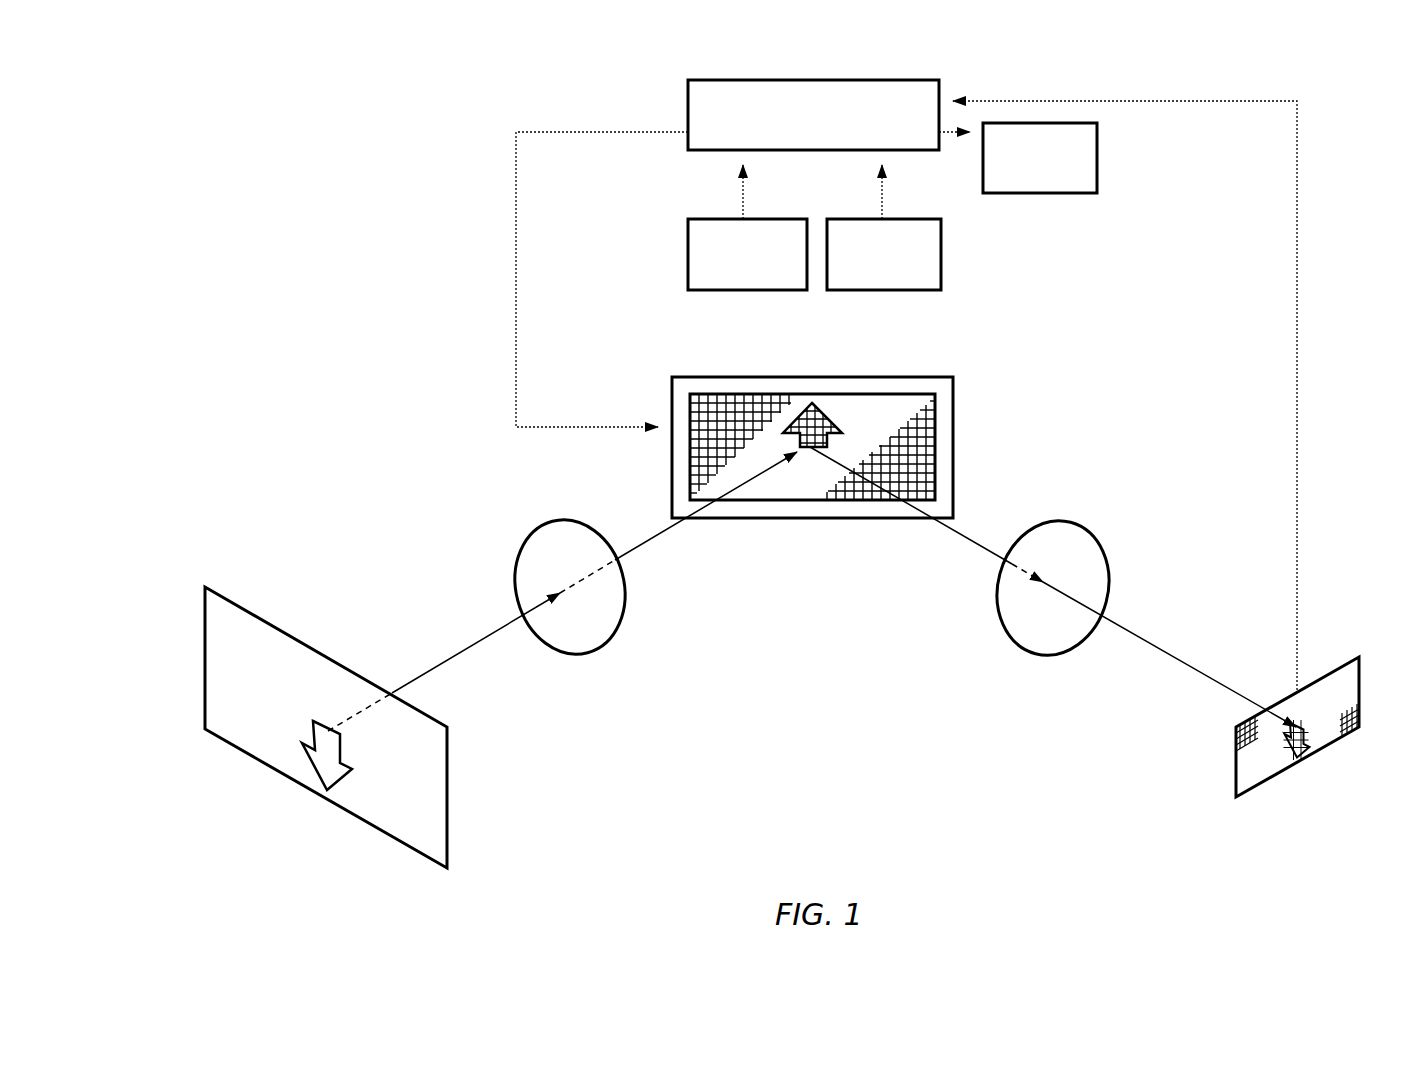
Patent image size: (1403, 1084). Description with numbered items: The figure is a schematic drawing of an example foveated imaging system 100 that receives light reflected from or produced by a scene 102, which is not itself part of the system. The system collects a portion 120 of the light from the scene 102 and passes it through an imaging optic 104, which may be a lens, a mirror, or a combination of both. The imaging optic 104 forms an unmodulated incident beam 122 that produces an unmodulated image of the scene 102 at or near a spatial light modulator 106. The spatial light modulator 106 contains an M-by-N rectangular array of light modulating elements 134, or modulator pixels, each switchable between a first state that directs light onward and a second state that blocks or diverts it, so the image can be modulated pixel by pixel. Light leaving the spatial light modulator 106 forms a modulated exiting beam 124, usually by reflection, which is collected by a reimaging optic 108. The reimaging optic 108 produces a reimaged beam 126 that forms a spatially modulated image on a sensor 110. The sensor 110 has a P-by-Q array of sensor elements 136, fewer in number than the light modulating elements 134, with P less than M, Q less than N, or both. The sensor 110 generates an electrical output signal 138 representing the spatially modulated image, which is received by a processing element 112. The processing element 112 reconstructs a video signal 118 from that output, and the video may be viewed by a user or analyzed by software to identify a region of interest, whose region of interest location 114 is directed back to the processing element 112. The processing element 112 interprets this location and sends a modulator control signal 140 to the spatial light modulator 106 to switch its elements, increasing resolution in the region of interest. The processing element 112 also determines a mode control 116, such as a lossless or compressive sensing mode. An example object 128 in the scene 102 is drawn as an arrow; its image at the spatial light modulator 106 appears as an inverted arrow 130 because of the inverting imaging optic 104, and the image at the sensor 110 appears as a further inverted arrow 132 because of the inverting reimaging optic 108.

The foveated imaging system 100 is at (250, 150).
The scene 102 is at (397, 733).
The imaging optic 104 is at (688, 677).
The spatial light modulator 106 is at (880, 421).
The reimaging optic 108 is at (920, 682).
The sensor 110 is at (1220, 783).
The processing element 112 is at (688, 88).
The region of interest location 114 is at (688, 245).
The mode control 116 is at (941, 262).
The video signal 118 is at (1097, 150).
The portion of light 120 is at (442, 663).
The unmodulated incident beam 122 is at (655, 545).
The modulated exiting beam 124 is at (985, 548).
The reimaged beam 126 is at (1187, 665).
The object 128 is at (300, 771).
The arrow 130 is at (822, 405).
The arrow 132 is at (1330, 758).
The light modulating elements 134 is at (713, 410).
The sensor elements 136 is at (1236, 737).
The electrical output signal 138 is at (1297, 520).
The modulator control signal 140 is at (516, 334).